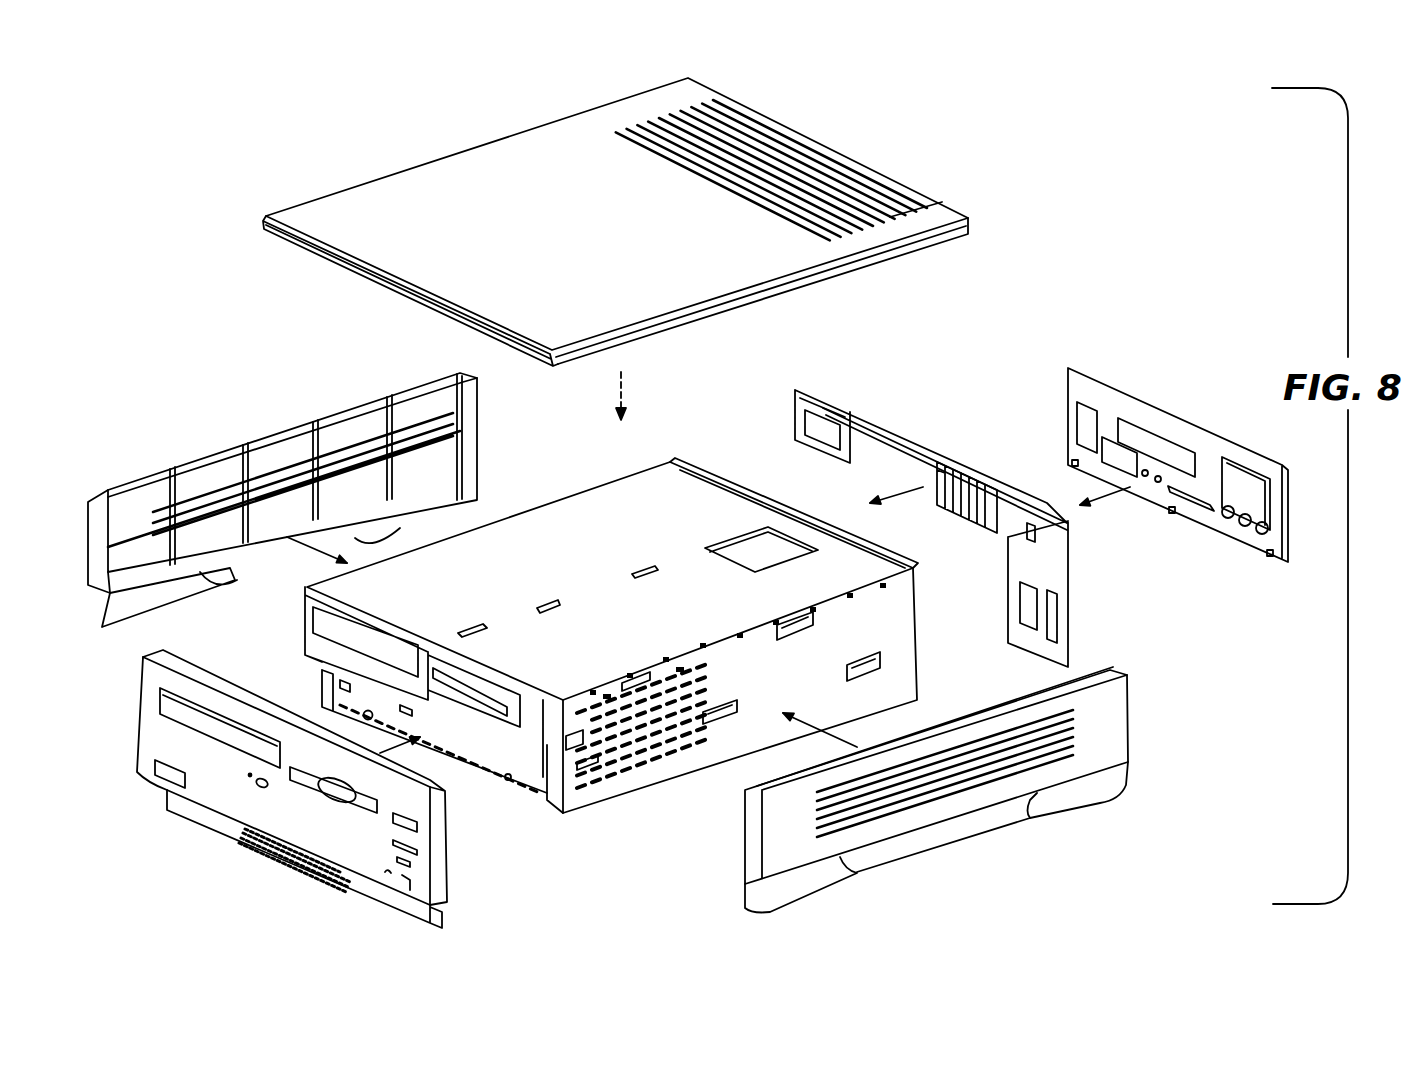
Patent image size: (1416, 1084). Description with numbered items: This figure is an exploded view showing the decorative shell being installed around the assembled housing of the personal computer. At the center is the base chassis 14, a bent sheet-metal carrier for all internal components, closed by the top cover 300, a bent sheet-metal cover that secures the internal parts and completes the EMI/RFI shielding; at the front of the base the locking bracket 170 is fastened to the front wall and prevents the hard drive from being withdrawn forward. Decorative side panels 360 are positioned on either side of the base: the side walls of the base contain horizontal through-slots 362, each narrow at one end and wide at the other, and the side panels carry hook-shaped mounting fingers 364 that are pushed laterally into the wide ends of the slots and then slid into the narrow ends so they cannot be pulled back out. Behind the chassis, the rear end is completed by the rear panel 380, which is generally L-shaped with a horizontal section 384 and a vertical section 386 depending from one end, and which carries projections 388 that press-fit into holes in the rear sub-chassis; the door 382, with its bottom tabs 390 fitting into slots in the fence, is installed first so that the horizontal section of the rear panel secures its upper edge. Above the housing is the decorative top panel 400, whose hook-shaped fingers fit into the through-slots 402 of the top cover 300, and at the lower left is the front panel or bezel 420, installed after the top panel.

The base chassis 14 is at (650, 657).
The locking bracket 170 is at (477, 743).
The top cover 300 is at (650, 657).
The decorative side panel 360 is at (661, 625).
The through-slot 362 is at (623, 680).
The mounting finger 364 is at (443, 437).
The rear panel 380 is at (930, 511).
The door 382 is at (1150, 474).
The horizontal section 384 is at (1005, 510).
The vertical section 386 is at (1057, 578).
The projections 388 is at (795, 400).
The bottom tabs 390 is at (1073, 465).
The decorative top panel 400 is at (850, 154).
The through-slots 402 is at (470, 633).
The front panel or bezel 420 is at (461, 857).